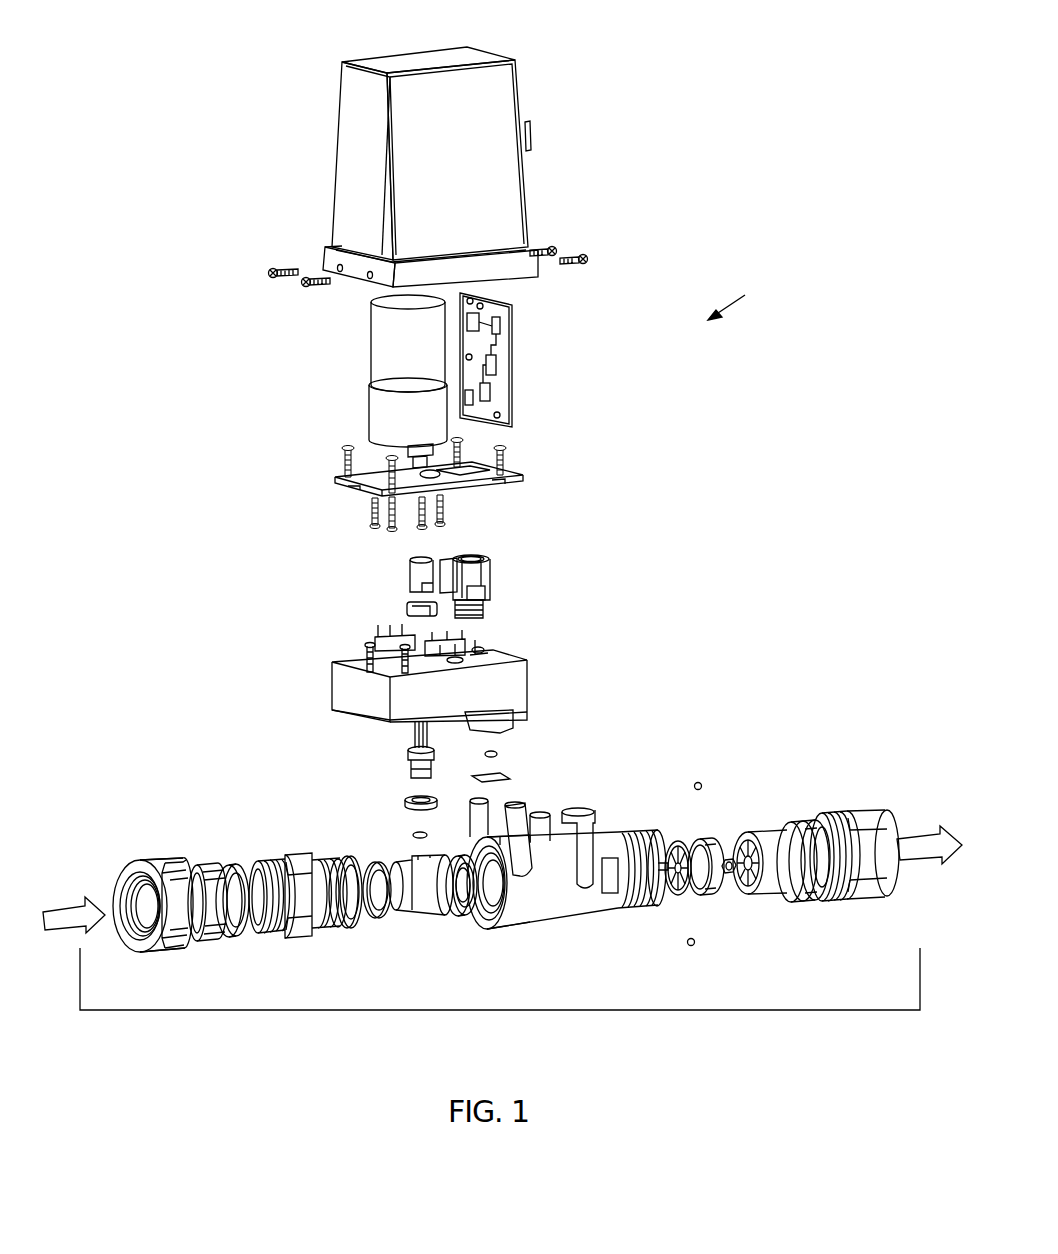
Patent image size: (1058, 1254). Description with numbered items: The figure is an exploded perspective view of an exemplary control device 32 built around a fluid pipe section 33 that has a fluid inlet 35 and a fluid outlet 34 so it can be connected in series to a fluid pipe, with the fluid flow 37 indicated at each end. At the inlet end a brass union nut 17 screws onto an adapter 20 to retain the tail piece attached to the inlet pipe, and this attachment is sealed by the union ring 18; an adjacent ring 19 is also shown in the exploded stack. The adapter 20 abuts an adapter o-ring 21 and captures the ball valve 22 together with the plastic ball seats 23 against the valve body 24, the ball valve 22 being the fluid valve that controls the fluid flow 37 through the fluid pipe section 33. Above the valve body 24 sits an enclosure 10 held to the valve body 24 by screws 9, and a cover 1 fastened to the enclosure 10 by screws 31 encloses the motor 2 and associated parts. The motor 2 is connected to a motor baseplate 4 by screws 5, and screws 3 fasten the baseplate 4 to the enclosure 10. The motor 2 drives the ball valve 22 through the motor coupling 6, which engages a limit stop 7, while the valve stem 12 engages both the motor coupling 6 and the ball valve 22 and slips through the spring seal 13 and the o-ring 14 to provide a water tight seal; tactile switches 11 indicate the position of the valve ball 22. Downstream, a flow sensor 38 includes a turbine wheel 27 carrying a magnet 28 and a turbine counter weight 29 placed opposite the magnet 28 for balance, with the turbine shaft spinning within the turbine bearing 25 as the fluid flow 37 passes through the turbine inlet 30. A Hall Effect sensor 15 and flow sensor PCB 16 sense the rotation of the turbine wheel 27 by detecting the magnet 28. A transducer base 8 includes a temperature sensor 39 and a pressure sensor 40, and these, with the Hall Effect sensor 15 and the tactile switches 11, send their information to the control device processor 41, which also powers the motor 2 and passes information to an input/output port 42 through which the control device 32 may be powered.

The cover 1 is at (353, 167).
The motor 2 is at (380, 350).
The screws 3 is at (347, 447).
The motor baseplate 4 is at (365, 487).
The screws 5 is at (377, 527).
The motor coupling 6 is at (415, 570).
The limit stop 7 is at (410, 607).
The transducer base 8 is at (490, 578).
The screws 9 is at (367, 642).
The enclosure 10 is at (355, 695).
The tactile switches 11 is at (473, 638).
The valve stem 12 is at (408, 753).
The spring seal 13 is at (407, 803).
The o-ring 14 is at (413, 835).
The Hall Effect sensor 15 is at (497, 752).
The flow sensor PCB 16 is at (502, 777).
The brass union nut 17 is at (158, 950).
The union ring 18 is at (210, 928).
The o-ring 19 is at (238, 937).
The adapter 20 is at (302, 933).
The adapter o-ring 21 is at (357, 928).
The ball valve 22 is at (425, 910).
The ball seats 23 is at (470, 917).
The valve body 24 is at (515, 915).
The turbine bearing 25 is at (731, 858).
The turbine wheel 27 is at (682, 897).
The magnet 28 is at (693, 946).
The turbine counter weight 29 is at (703, 783).
The turbine inlet 30 is at (768, 893).
The screws 31 is at (268, 273).
The control device 32 is at (742, 300).
The fluid pipe section 33 is at (562, 910).
The fluid outlet 34 is at (863, 805).
The fluid inlet 35 is at (168, 862).
The fluid flow 37 is at (502, 848).
The flow sensor 38 is at (702, 890).
The temperature sensor 39 is at (475, 558).
The pressure sensor 40 is at (471, 559).
The control device processor 41 is at (503, 347).
The input/output port 42 is at (530, 138).